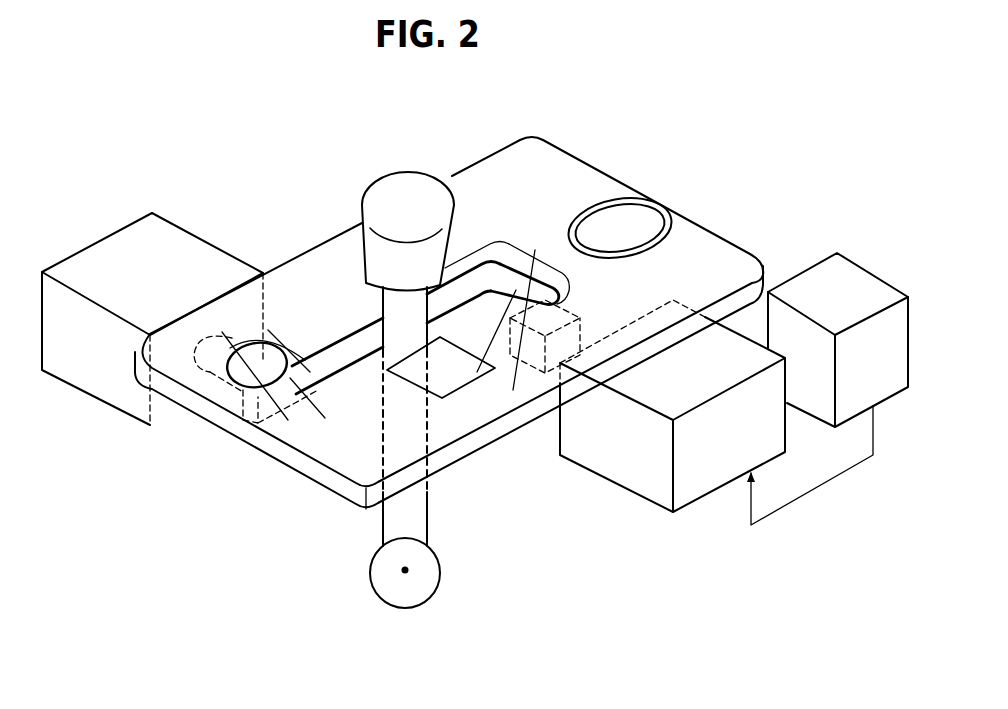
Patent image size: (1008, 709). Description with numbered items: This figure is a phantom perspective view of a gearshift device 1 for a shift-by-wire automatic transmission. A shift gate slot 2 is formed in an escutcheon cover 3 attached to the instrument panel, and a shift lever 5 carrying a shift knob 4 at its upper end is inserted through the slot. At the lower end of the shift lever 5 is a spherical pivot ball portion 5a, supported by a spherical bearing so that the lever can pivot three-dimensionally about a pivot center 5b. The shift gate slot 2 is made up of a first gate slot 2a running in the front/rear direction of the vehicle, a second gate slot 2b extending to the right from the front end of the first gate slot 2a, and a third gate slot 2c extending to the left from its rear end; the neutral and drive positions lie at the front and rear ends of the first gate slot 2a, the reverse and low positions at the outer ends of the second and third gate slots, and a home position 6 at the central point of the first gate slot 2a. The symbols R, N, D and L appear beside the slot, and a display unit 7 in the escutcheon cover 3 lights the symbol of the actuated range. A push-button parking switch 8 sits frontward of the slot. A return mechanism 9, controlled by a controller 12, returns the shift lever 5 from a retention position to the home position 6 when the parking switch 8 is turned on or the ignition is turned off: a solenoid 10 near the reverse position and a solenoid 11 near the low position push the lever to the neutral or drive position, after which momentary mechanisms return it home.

The gearshift device 1 is at (249, 476).
The shift gate slot 2 is at (352, 375).
The first gate slot 2a is at (468, 300).
The second gate slot 2b is at (500, 258).
The third gate slot 2c is at (295, 436).
The escutcheon cover 3 is at (292, 444).
The shift knob 4 is at (404, 186).
The shift lever 5 is at (392, 300).
The spherical pivot ball portion 5a is at (437, 553).
The pivot center 5b is at (410, 572).
The home position 6 is at (355, 300).
The display unit 7 is at (468, 392).
The parking switch 8 is at (645, 222).
The return mechanism 9 is at (77, 240).
The solenoid 10 is at (706, 480).
The solenoid 11 is at (193, 242).
The controller 12 is at (812, 267).